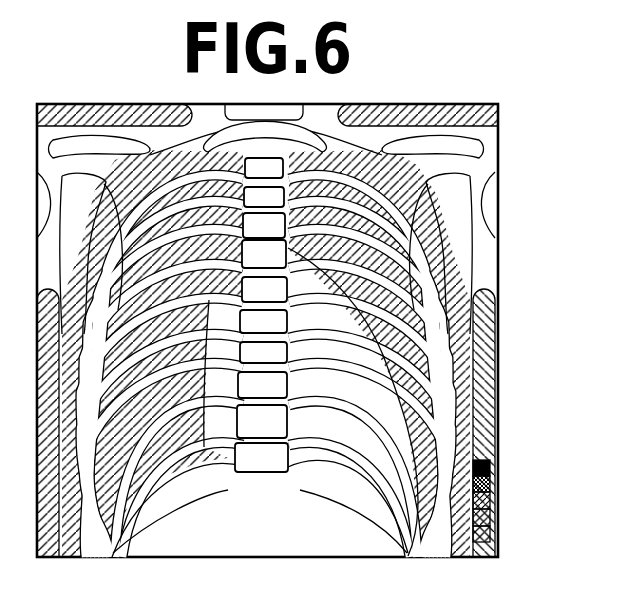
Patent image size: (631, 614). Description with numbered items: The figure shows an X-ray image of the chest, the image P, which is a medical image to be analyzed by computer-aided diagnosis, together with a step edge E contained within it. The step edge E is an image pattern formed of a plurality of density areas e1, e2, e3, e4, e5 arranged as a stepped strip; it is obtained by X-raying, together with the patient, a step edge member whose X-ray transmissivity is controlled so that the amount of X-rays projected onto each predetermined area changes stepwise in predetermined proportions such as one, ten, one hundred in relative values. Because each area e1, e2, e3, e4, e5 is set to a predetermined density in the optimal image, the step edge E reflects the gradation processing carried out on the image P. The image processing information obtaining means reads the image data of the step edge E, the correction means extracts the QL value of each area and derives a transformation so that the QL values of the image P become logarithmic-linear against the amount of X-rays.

The image P is at (440, 104).
The step edge E is at (519, 488).
The predetermined area e1 is at (495, 542).
The predetermined area e2 is at (490, 523).
The predetermined area e3 is at (490, 505).
The density step e4 is at (490, 487).
The density step e5 (highest density) e5 is at (489, 472).